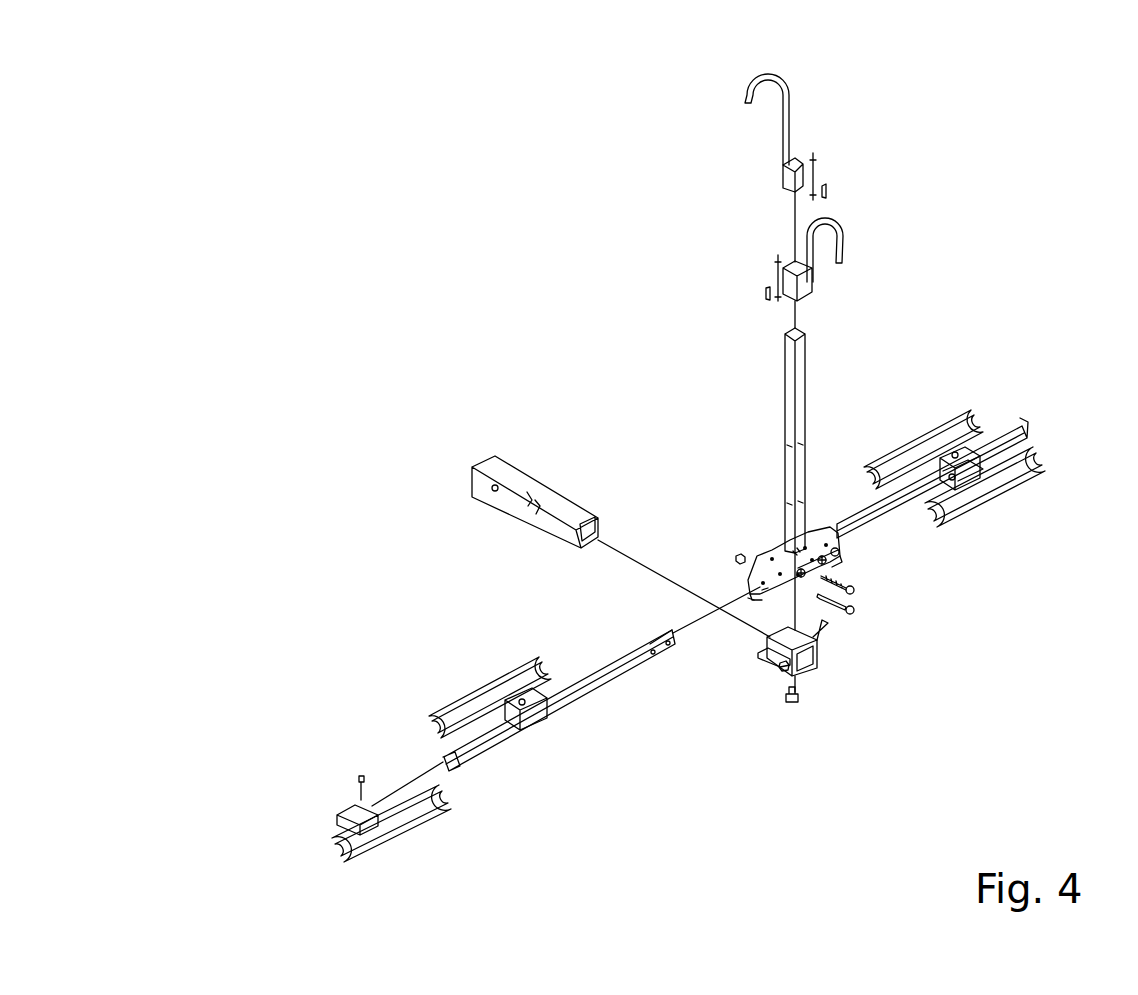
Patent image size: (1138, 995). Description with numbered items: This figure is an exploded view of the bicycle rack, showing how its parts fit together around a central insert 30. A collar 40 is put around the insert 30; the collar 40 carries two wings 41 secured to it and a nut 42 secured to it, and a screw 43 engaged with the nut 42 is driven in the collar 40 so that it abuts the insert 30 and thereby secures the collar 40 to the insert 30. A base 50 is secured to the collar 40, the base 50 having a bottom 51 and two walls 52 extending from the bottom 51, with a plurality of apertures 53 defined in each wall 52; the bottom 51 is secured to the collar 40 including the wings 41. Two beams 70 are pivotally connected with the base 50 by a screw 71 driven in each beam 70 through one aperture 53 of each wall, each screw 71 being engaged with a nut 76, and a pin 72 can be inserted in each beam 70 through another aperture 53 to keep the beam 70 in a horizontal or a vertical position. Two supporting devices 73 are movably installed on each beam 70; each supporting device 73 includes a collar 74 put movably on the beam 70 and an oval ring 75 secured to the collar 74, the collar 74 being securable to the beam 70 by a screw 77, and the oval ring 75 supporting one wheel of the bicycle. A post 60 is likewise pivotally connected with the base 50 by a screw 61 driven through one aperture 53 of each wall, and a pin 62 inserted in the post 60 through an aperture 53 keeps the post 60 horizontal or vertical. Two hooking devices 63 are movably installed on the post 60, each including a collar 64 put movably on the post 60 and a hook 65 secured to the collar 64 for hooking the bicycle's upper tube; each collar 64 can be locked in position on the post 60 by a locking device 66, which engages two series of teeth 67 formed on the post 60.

The insert 30 is at (528, 511).
The collar 40 is at (783, 670).
The wings 41 is at (755, 655).
The nut 42 is at (813, 666).
The screw 43 is at (800, 700).
The base 50 is at (757, 550).
The bottom 51 is at (752, 600).
The walls 52 is at (826, 562).
The apertures 53 is at (765, 590).
The post 60 is at (806, 343).
The screw 61 is at (800, 550).
The pin 62 is at (796, 553).
The hooking device 63 is at (810, 132).
The collar 64 is at (783, 183).
The hook 65 is at (783, 92).
The locking device 66 is at (825, 195).
The teeth 67 is at (785, 401).
The beam 70 is at (515, 730).
The screw 71 is at (854, 590).
The pin 72 is at (853, 612).
The supporting device 73 is at (313, 830).
The collar 74 is at (355, 812).
The oval ring 75 is at (323, 860).
The nut 76 is at (734, 557).
The screw 77 is at (362, 782).